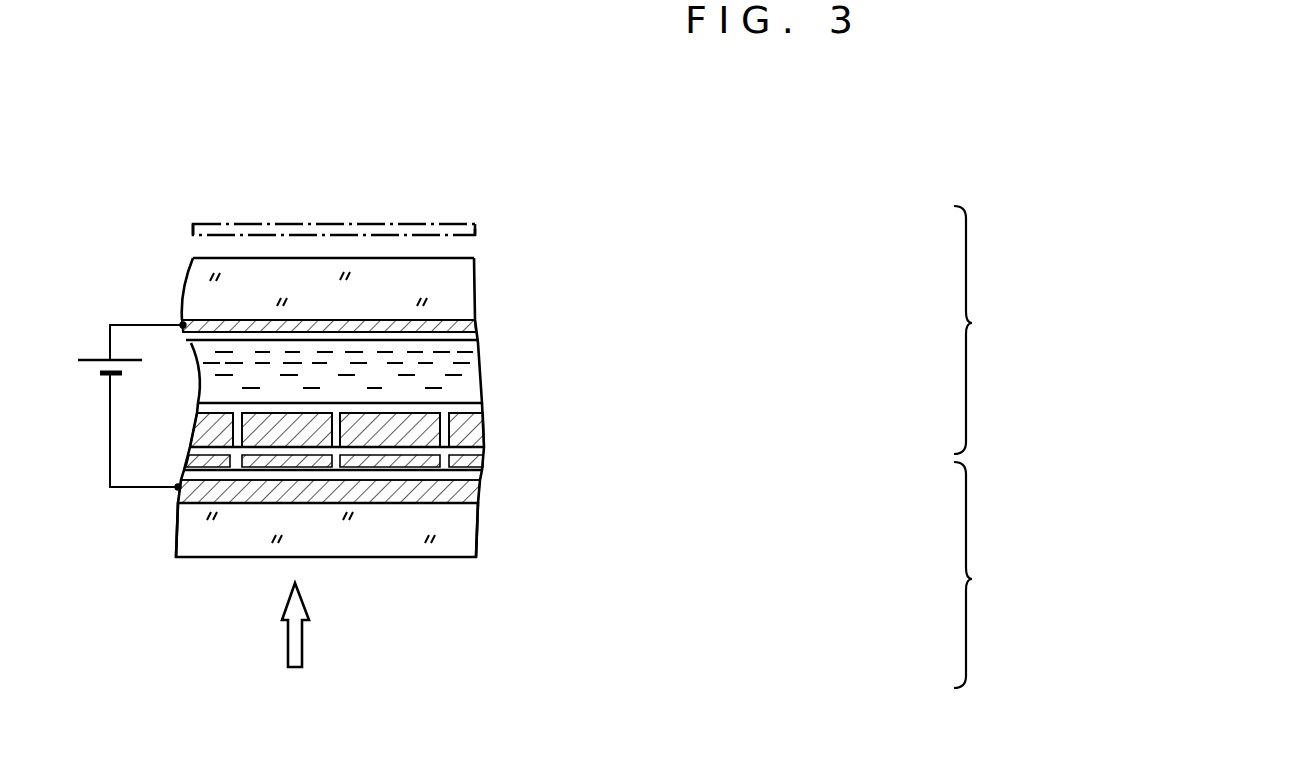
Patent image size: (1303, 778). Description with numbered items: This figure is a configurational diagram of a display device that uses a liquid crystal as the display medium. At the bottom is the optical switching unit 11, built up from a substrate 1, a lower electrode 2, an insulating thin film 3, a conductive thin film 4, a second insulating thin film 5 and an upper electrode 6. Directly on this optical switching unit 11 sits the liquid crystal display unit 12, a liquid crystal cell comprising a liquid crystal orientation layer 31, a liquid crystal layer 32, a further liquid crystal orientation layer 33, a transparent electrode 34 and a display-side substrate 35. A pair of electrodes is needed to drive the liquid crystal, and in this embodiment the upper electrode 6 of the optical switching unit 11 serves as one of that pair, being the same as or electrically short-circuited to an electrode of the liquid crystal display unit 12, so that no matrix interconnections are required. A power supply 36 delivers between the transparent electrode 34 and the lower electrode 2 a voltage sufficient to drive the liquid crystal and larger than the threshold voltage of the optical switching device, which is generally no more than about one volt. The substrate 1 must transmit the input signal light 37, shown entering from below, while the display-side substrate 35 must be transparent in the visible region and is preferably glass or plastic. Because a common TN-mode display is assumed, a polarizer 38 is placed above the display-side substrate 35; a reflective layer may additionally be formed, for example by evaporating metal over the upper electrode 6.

The substrate 1 is at (477, 497).
The lower electrode 2 is at (479, 481).
The insulating thin film 3 is at (479, 471).
The conductive thin film 4 is at (479, 462).
The insulating thin film 5 is at (479, 453).
The upper electrode 6 is at (483, 430).
The optical switching unit 11 is at (1111, 575).
The liquid crystal display unit 12 is at (1092, 330).
The liquid crystal orientation layer 31 is at (483, 410).
The liquid crystal layer 32 is at (480, 371).
The liquid crystal orientation layer 33 is at (478, 340).
The transparent electrode 34 is at (477, 325).
The display-side substrate 35 is at (477, 283).
The power supply 36 is at (87, 357).
The input signal light 37 is at (288, 642).
The polarizer 38 is at (437, 224).